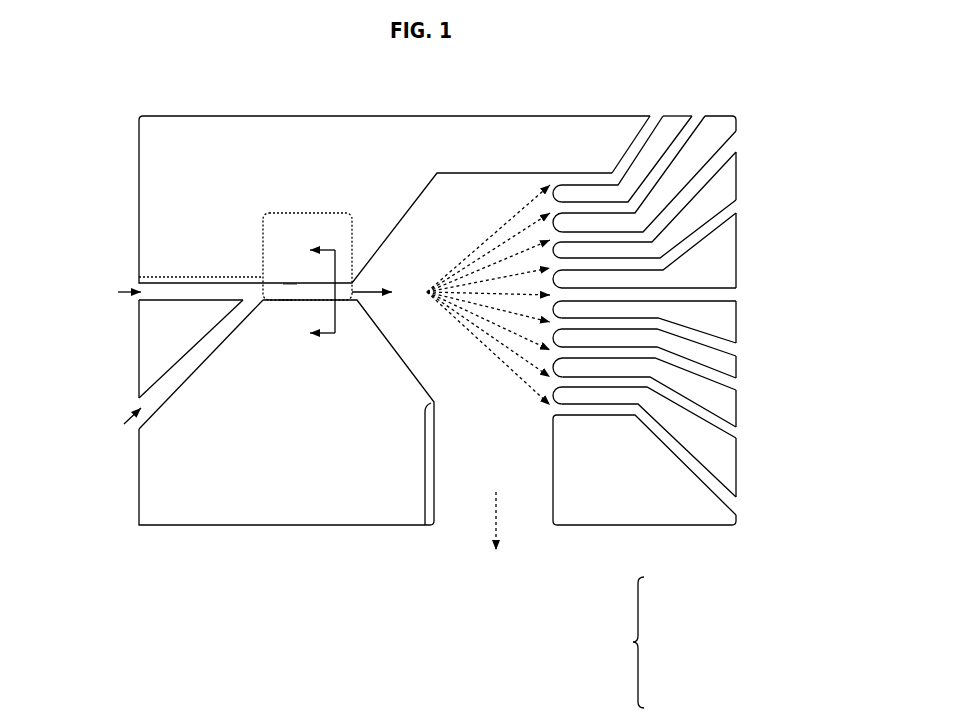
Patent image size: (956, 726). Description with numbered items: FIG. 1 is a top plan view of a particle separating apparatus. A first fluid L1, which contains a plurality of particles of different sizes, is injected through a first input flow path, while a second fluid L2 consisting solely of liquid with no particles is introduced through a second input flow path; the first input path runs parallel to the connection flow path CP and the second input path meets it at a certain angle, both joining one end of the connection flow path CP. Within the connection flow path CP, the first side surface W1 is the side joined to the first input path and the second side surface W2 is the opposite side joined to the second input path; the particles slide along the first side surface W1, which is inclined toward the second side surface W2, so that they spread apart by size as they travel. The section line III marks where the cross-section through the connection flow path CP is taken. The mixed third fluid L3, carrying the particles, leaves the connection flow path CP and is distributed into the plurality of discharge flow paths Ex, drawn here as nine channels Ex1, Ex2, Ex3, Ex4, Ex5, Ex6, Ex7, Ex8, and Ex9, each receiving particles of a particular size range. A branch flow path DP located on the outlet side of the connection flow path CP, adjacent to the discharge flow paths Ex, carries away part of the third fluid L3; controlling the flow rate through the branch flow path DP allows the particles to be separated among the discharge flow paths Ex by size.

The first fluid L1 is at (118, 293).
The second fluid L2 is at (118, 430).
The third fluid L3 is at (380, 277).
The connection flow path CP is at (310, 212).
The first side surface W1 is at (290, 290).
The second side surface W2 is at (285, 302).
The section line III- III is at (322, 295).
The branch flow path DP is at (427, 462).
The first discharge flow path Ex1 is at (656, 114).
The second discharge flow path Ex2 is at (700, 114).
The third discharge flow path Ex3 is at (739, 143).
The fourth discharge flow path Ex4 is at (739, 206).
The fifth discharge flow path Ex5 is at (739, 295).
The sixth discharge flow path Ex6 is at (739, 350).
The seventh discharge flow path Ex7 is at (739, 384).
The eighth discharge flow path Ex8 is at (739, 432).
The ninth discharge flow path Ex9 is at (739, 505).
The plurality of discharge flow paths Ex is at (665, 677).